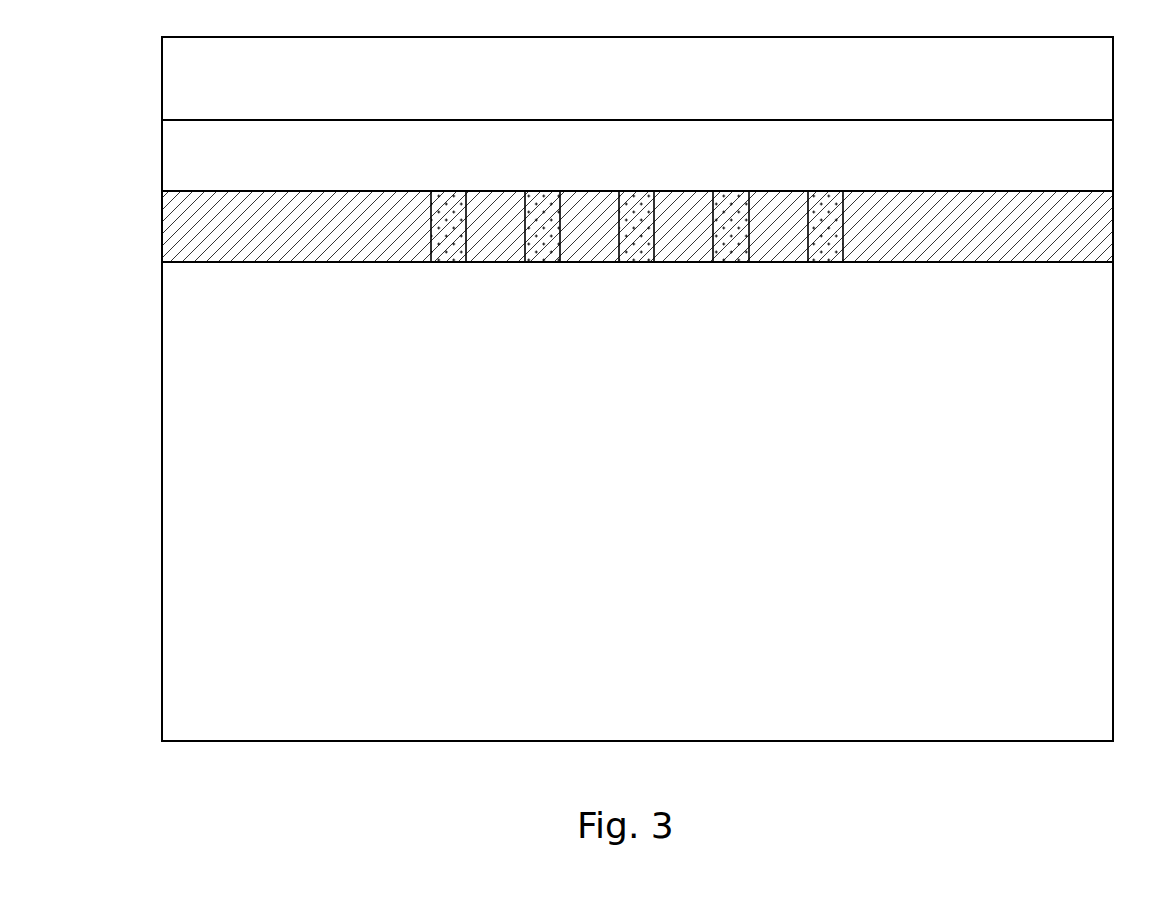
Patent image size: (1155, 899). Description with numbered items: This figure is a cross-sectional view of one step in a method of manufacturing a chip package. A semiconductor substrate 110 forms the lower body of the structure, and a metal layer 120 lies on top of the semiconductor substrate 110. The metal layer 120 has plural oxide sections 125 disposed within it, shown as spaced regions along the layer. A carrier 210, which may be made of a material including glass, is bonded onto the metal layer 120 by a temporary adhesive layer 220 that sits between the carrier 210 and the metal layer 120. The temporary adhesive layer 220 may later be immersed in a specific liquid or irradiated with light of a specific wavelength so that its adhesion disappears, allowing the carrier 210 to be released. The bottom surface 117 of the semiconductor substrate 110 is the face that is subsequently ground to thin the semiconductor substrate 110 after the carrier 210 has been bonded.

The carrier 210 is at (187, 84).
The temporary adhesive layer 220 is at (187, 157).
The metal layer 120 is at (187, 231).
The oxide sections 125 is at (450, 223).
The semiconductor substrate 110 is at (187, 494).
The bottom surface 117 is at (262, 757).